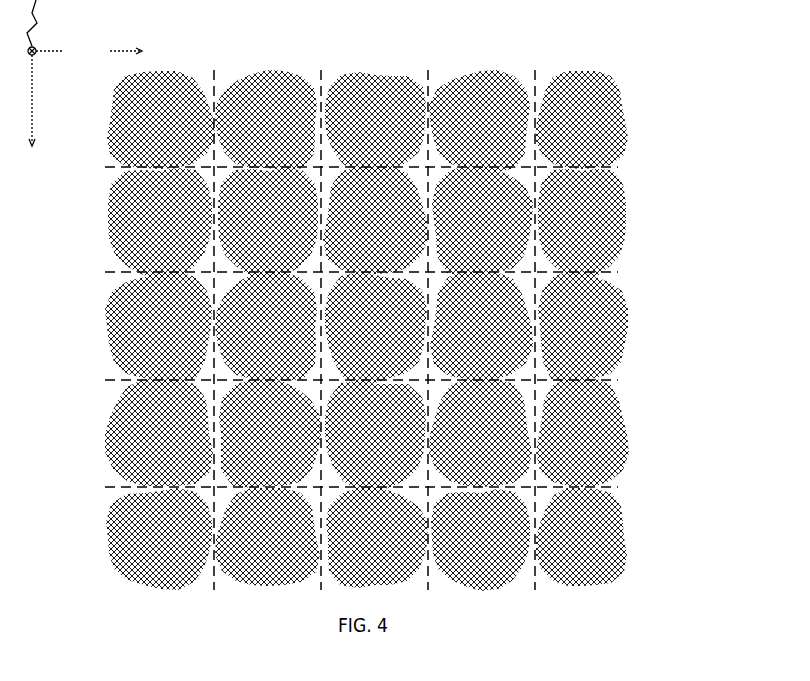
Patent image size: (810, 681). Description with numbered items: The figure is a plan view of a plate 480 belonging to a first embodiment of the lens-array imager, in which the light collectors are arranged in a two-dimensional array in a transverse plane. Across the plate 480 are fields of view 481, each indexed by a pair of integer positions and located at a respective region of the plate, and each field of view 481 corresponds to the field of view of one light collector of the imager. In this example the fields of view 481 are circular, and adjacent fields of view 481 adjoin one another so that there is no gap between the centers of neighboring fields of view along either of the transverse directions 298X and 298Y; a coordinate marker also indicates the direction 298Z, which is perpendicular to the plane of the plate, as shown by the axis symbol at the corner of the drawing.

The plate 480 is at (673, 52).
The field of view 481 is at (367, 330).
The direction 298X is at (89, 51).
The direction 298Y is at (34, 113).
The Z axis 298Z is at (43, 23).